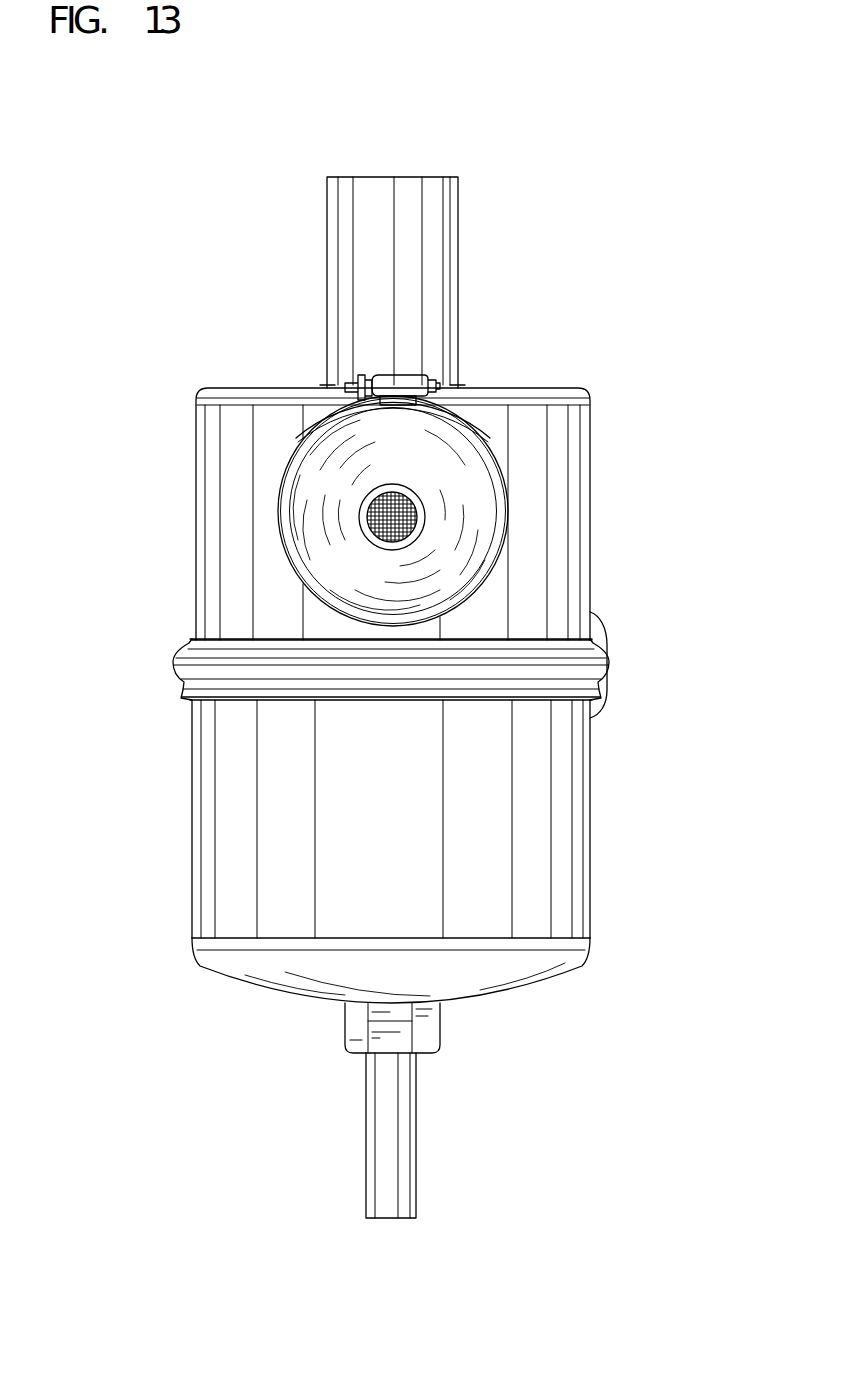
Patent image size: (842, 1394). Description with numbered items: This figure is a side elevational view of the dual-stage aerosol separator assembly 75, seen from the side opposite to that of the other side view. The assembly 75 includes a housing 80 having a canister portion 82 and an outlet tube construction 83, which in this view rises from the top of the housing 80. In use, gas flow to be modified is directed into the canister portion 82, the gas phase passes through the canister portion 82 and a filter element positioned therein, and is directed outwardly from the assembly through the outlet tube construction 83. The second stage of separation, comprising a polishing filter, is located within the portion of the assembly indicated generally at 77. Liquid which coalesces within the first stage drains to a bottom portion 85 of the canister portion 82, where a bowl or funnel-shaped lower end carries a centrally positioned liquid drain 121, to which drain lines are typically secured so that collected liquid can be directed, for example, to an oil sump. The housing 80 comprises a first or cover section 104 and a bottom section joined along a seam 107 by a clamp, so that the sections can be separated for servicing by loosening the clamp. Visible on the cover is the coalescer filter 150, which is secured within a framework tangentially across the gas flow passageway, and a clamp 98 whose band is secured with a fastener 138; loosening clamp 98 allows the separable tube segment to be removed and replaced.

The dual-stage aerosol separator assembly 75 is at (147, 378).
The second stage portion 77 is at (163, 847).
The housing 80 is at (609, 419).
The canister portion 82 is at (562, 826).
The outlet tube construction 83 is at (459, 233).
The bottom portion 85 is at (535, 985).
The clamp 98 is at (432, 388).
The first or cover section 104 is at (233, 390).
The seam 107 is at (383, 725).
The liquid drain 121 is at (415, 1133).
The fastener 138 is at (343, 385).
The coalescer filter 150 is at (396, 512).